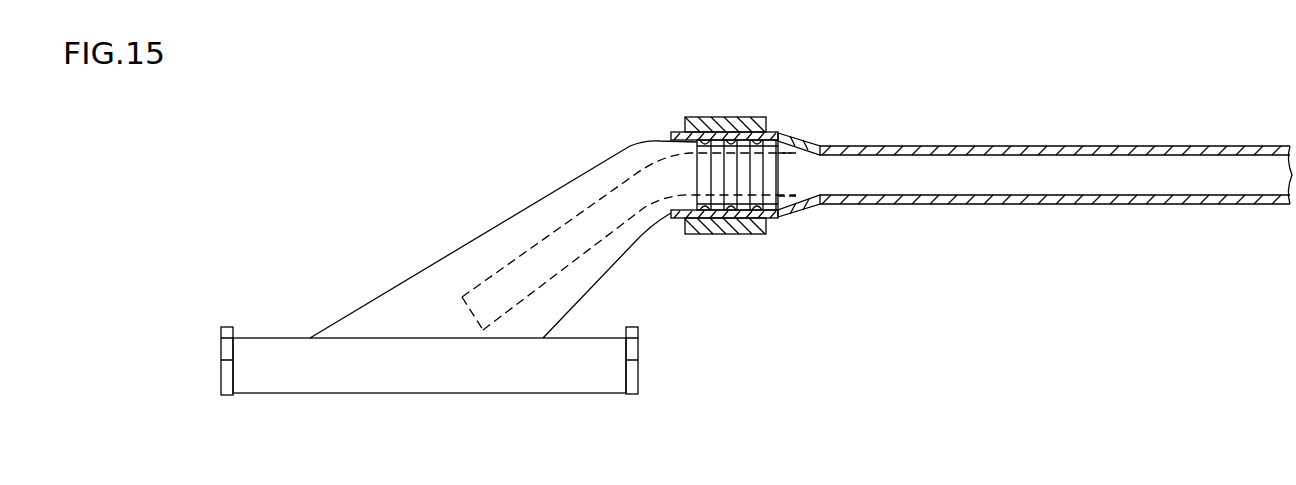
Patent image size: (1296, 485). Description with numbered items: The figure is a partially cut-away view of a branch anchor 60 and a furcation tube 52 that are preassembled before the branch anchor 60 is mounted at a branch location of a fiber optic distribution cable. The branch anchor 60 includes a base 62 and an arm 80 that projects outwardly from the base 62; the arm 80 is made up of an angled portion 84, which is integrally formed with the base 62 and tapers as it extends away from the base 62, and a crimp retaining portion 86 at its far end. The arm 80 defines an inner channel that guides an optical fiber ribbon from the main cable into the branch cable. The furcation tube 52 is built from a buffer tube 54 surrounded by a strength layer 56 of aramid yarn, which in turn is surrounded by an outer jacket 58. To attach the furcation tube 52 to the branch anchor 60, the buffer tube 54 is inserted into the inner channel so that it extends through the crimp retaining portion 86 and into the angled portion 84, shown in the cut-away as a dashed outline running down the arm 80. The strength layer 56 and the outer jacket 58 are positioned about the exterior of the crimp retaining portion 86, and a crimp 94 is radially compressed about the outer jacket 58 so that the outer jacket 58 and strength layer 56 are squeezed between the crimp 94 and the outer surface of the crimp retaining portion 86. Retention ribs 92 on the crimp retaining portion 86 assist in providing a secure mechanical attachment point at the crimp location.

The furcation tube 52 is at (933, 140).
The buffer tube 54 is at (570, 217).
The strength layer 56 is at (800, 142).
The outer jacket 58 is at (778, 133).
The branch anchor 60 is at (325, 318).
The base 62 is at (249, 329).
The arm 80 is at (400, 276).
The angled portion 84 is at (503, 239).
The crimp retaining portion 86 is at (697, 150).
The retention ribs 92 is at (718, 215).
The crimp 94 is at (718, 117).